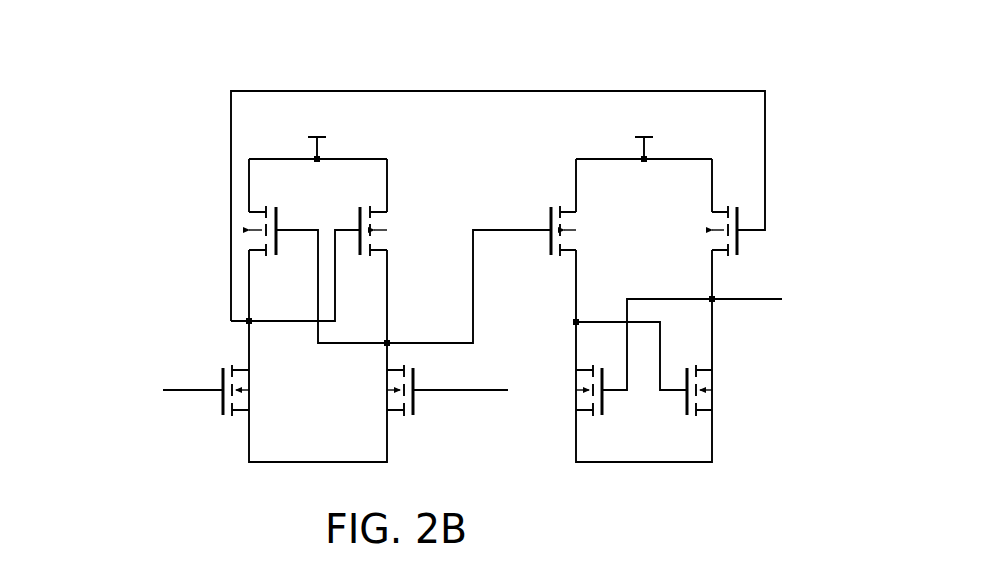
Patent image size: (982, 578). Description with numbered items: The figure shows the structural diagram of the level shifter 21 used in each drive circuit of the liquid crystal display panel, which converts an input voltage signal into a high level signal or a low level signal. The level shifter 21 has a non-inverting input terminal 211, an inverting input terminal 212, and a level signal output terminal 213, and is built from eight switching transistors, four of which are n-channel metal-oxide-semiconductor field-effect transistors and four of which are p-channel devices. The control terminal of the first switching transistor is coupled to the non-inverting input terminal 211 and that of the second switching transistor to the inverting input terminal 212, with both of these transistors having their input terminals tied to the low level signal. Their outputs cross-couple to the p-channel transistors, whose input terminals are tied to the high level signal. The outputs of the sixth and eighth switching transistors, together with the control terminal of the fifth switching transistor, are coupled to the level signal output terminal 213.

The level shifter 21 is at (154, 135).
The non-inverting input terminal 211 is at (189, 375).
The inverting input terminal 212 is at (460, 378).
The level signal output terminal 213 is at (747, 285).